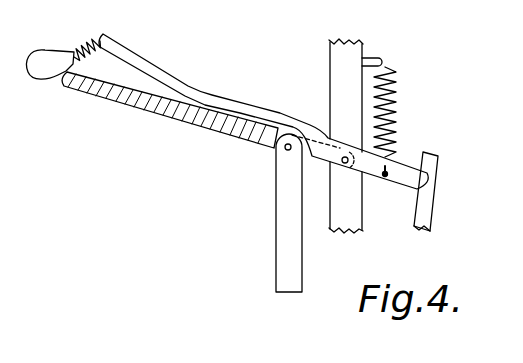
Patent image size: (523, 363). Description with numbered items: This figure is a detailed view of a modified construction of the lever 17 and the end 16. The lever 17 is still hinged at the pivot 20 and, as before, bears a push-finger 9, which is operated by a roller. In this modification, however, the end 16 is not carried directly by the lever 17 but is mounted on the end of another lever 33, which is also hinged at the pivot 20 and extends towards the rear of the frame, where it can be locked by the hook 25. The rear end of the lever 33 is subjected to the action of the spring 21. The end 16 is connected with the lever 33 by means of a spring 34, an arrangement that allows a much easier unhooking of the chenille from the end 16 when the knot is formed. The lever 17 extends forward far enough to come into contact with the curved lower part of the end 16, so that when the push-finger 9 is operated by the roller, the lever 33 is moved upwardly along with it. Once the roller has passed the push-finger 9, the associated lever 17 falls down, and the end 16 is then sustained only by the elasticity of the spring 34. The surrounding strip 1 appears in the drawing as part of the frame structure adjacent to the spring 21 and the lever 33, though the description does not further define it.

The strip 1 is at (347, 77).
The push-finger 9 is at (284, 206).
The end 16 is at (50, 78).
The lever 17 is at (180, 107).
The pivot 20 is at (344, 164).
The spring 21 is at (390, 105).
The hook 25 is at (438, 176).
The lever 33 is at (170, 85).
The spring 34 is at (88, 40).